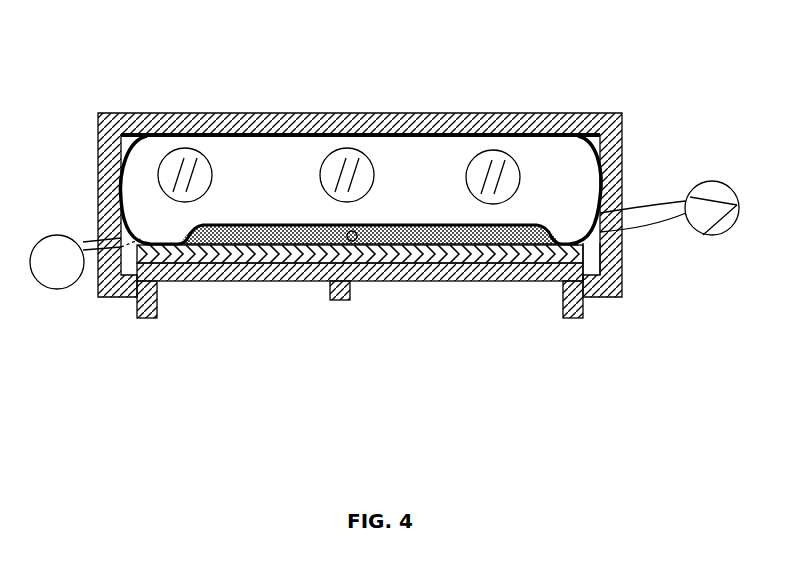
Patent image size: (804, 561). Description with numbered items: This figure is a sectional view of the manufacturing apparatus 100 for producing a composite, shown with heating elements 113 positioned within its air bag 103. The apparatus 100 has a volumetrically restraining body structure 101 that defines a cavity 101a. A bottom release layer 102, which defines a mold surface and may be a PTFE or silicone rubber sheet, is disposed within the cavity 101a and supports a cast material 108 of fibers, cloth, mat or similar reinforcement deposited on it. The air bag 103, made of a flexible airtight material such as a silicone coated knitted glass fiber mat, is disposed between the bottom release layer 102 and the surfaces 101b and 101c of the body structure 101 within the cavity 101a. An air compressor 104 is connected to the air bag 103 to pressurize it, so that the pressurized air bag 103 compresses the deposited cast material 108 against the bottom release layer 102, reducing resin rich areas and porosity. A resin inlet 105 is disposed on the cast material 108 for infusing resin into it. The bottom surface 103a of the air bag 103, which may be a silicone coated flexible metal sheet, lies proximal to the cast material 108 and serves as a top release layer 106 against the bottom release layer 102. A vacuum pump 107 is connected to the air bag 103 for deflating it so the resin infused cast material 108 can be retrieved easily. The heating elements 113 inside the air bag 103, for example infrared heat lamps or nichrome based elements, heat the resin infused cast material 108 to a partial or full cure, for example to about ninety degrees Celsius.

The apparatus 100 is at (349, 56).
The volumetrically restraining body structure 101 is at (232, 128).
The cavity 101a is at (596, 263).
The surface of the volumetrically restraining body structure 101b is at (124, 192).
The surface of the volumetrically restraining body structure 101c is at (596, 185).
The bottom release layer 102 is at (225, 241).
The air bag 103 is at (134, 160).
The bottom surface of the air bag 103a is at (545, 226).
The air compressor 104 is at (55, 291).
The resin inlet 105 is at (357, 241).
The top release layer 106 is at (264, 222).
The vacuum pump 107 is at (733, 204).
The cast material 108 is at (498, 234).
The heating elements 113 is at (318, 177).